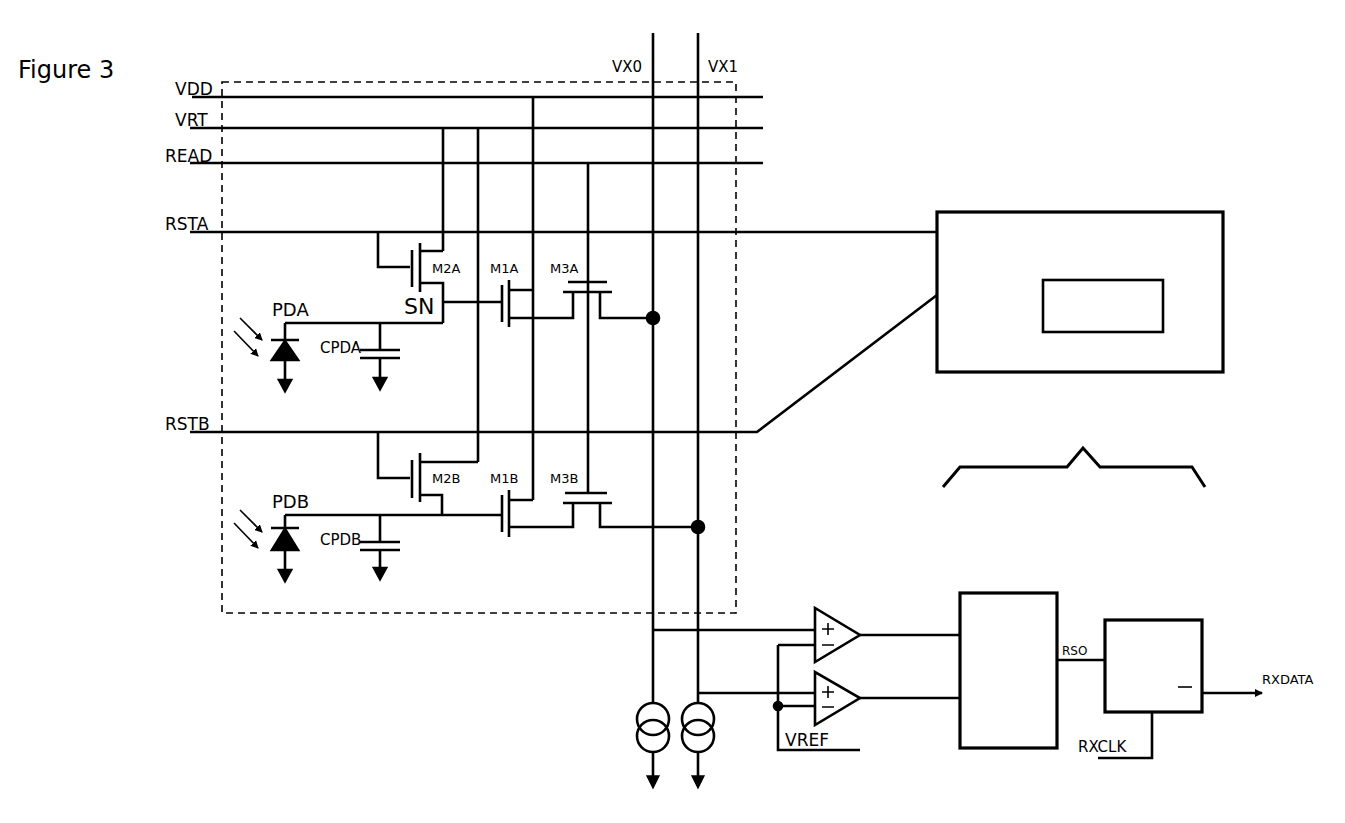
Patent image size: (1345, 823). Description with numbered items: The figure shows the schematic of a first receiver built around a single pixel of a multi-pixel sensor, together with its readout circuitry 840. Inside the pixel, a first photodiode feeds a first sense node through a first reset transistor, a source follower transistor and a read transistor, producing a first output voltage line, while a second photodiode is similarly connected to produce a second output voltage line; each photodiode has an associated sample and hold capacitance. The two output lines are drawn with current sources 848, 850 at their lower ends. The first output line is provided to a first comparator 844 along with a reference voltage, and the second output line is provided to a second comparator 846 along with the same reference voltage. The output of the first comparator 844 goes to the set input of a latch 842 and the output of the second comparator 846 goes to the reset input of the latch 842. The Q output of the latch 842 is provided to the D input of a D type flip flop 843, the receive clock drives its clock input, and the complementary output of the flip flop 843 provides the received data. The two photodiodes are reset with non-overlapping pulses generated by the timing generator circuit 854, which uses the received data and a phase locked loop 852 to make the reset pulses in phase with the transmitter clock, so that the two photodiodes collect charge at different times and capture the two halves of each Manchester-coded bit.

The timing generator circuit 854 is at (1080, 292).
The phase locked loop 852 is at (1103, 306).
The readout circuit 840 is at (1074, 447).
The latch 842 is at (1010, 594).
The D type flip flop 843 is at (1152, 628).
The first comparator 844 is at (818, 606).
The second comparator 846 is at (846, 712).
The current source 848 is at (634, 737).
The current source 850 is at (716, 752).